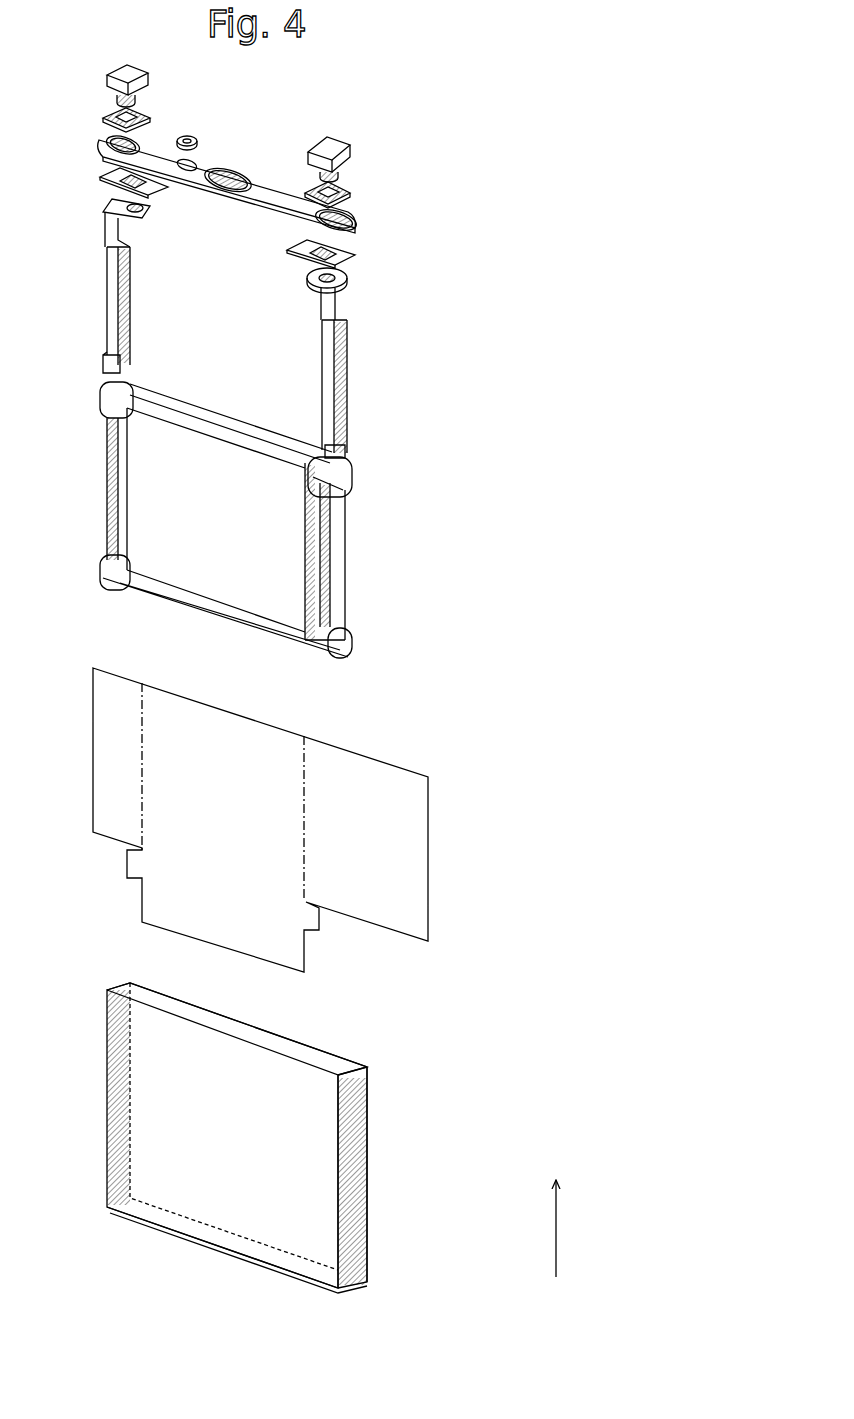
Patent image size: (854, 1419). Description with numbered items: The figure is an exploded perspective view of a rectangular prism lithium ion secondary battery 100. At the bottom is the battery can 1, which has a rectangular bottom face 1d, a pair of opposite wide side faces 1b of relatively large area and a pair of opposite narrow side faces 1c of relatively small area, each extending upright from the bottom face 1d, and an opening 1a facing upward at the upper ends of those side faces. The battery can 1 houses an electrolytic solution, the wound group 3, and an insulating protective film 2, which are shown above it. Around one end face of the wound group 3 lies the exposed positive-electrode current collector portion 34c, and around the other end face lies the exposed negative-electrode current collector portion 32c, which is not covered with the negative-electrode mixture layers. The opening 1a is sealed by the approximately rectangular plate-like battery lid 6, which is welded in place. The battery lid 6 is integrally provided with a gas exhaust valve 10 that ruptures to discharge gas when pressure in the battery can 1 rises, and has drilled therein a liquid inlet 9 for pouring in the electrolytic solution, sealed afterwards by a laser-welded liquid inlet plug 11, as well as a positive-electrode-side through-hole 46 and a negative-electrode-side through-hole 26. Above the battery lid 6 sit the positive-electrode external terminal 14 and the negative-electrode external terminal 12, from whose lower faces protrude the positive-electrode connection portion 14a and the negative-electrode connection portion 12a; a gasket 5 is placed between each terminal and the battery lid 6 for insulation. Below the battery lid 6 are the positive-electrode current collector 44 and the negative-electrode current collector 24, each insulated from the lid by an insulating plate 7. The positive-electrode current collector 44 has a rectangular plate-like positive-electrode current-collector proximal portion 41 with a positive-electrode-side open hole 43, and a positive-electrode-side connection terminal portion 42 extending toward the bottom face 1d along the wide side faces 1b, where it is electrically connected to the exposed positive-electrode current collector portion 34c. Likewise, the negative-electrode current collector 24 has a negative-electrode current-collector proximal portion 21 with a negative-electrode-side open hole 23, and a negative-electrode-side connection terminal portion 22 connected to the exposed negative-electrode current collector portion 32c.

The lithium ion secondary battery 100 is at (453, 177).
The positive-electrode external terminal 14 is at (102, 75).
The positive-electrode connection portion 14a is at (108, 100).
The gasket 5 is at (105, 122).
The positive-electrode-side through-hole 46 is at (112, 145).
The battery lid 6 is at (283, 197).
The liquid inlet plug 11 is at (185, 130).
The liquid inlet 9 is at (193, 160).
The gas exhaust valve 10 is at (237, 173).
The insulating plate 7 is at (108, 177).
The positive-electrode current-collector proximal portion 41 is at (105, 200).
The positive-electrode-side open hole 43 is at (133, 210).
The positive-electrode current collector 44 is at (108, 298).
The positive-electrode-side connection terminal portion 42 is at (108, 337).
The negative-electrode external terminal 12 is at (350, 145).
The negative-electrode connection portion 12a is at (342, 172).
The negative-electrode-side through-hole 26 is at (357, 215).
The negative-electrode-side open hole 23 is at (310, 278).
The negative-electrode current-collector proximal portion 21 is at (347, 275).
The negative-electrode current collector 24 is at (340, 367).
The negative-electrode-side connection terminal portion 22 is at (337, 407).
The wound group 3 is at (353, 558).
The exposed positive-electrode current collector portion 34c is at (108, 510).
The exposed negative-electrode current collector portion 32c is at (335, 592).
The insulating protective film 2 is at (410, 872).
The battery can 1 is at (372, 1170).
The opening 1a is at (108, 986).
The wide side faces 1b is at (162, 1140).
The narrow side faces 1c is at (358, 1218).
The bottom face 1d is at (198, 1230).